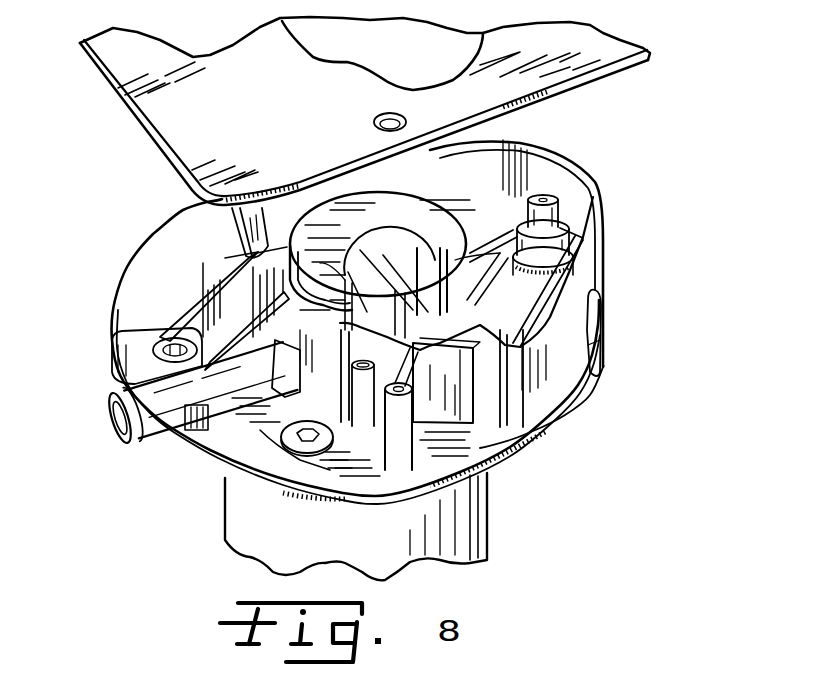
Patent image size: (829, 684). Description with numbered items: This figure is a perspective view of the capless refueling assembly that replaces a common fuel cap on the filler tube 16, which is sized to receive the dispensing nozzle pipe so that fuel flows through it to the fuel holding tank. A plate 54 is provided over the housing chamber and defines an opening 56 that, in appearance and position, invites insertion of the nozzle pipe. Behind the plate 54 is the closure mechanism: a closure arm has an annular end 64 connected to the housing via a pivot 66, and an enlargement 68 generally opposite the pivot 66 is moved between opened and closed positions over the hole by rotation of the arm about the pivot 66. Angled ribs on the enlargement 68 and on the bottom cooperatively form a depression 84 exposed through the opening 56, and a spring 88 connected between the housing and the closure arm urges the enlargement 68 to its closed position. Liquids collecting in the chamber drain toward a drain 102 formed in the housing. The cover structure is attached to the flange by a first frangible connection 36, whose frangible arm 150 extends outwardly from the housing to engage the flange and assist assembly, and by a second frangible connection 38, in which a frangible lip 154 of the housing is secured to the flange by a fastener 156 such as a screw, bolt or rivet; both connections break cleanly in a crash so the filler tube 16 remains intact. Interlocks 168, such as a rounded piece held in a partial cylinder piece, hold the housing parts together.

The filler tube 16 is at (473, 527).
The first frangible connection 36 is at (608, 378).
The second frangible connection 38 is at (262, 510).
The plate 54 is at (580, 58).
The opening 56 is at (410, 61).
The annular end 64 is at (500, 215).
The pivot 66 is at (578, 232).
The enlargement 68 is at (418, 217).
The depression 84 is at (402, 258).
The spring 88 is at (565, 290).
The drain 102 is at (105, 430).
The frangible arm 150 is at (605, 337).
The frangible lip 154 is at (234, 440).
The fastener 156 is at (318, 532).
The interlock 168 is at (390, 510).